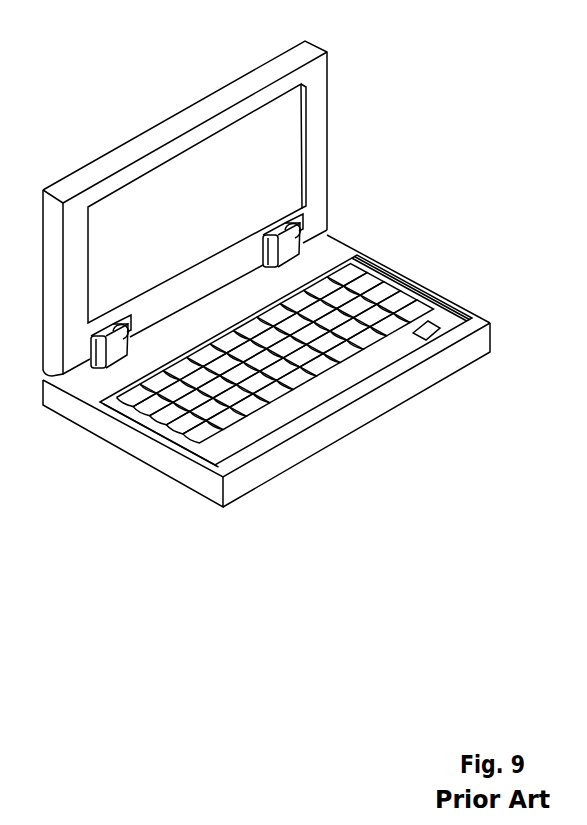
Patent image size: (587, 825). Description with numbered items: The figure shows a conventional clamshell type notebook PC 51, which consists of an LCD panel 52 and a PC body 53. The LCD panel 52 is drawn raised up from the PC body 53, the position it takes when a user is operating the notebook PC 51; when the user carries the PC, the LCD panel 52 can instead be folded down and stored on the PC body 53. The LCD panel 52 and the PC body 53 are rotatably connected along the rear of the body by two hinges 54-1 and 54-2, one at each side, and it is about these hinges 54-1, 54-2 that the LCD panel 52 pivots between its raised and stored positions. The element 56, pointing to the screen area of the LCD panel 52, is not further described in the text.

The clamshell type notebook PC 51 is at (347, 147).
The LCD panel 52 is at (230, 202).
The PC body 53 is at (345, 425).
The hinge 54-1 is at (108, 347).
The hinge 54-2 is at (328, 230).
The display screen 56 is at (162, 190).